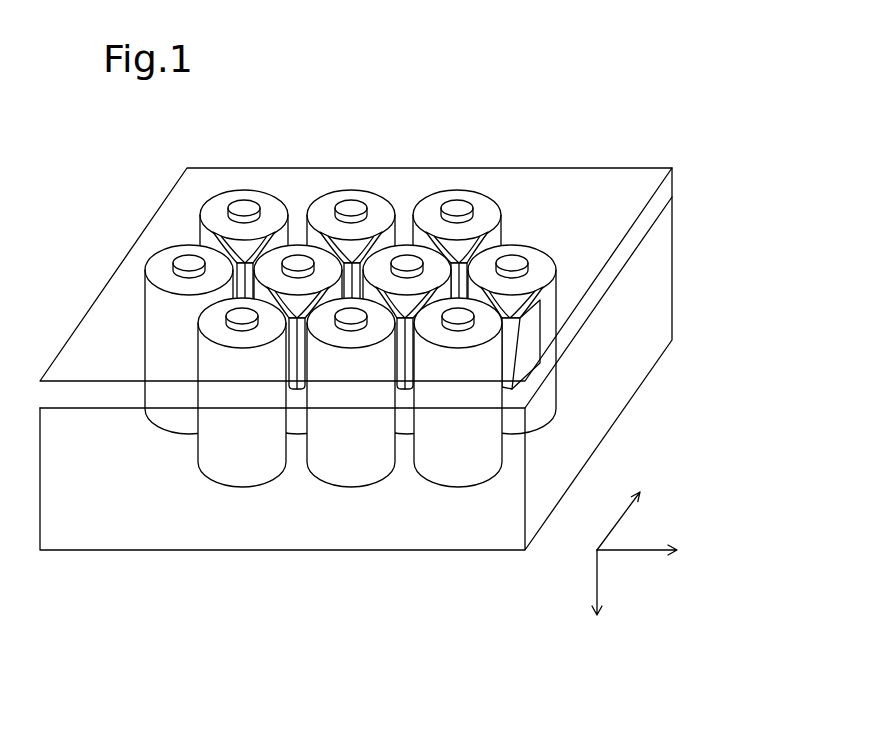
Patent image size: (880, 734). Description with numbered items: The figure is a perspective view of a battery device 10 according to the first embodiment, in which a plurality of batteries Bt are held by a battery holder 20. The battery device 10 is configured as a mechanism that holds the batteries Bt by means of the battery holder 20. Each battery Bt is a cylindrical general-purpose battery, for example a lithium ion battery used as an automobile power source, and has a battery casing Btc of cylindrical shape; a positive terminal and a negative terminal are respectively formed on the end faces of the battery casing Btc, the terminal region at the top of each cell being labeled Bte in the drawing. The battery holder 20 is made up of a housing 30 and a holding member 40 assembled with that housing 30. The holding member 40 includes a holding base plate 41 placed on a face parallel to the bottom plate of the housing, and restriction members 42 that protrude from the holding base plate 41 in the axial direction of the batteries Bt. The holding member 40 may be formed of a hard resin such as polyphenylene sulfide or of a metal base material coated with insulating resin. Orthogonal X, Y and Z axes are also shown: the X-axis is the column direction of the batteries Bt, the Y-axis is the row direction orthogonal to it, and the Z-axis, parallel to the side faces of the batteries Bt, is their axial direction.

The battery device 10 is at (594, 140).
The battery holder 20 is at (432, 329).
The housing 30 is at (407, 373).
The holding member 40 is at (407, 258).
The holding base plate 41 is at (349, 167).
The restriction member 42 is at (260, 214).
The battery Bt is at (602, 339).
The battery casing Btc is at (555, 312).
The battery electrode terminal Bte is at (555, 267).